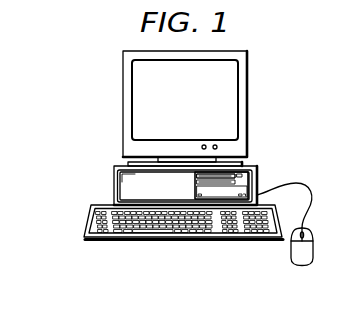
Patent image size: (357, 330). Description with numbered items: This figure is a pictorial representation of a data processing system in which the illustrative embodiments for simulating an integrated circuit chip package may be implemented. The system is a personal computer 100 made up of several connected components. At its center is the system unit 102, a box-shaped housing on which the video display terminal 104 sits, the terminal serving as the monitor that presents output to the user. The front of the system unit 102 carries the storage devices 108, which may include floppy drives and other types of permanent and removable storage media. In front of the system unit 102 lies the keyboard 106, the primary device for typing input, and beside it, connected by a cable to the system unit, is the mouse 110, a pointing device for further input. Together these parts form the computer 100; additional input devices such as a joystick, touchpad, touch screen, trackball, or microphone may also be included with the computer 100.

The computer 100 is at (72, 97).
The system unit 102 is at (114, 183).
The video display terminal 104 is at (248, 103).
The keyboard 106 is at (110, 245).
The storage devices 108 is at (230, 175).
The mouse 110 is at (302, 266).